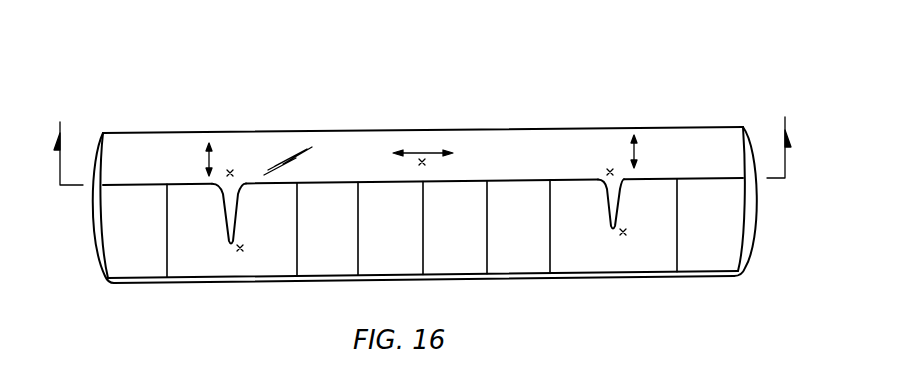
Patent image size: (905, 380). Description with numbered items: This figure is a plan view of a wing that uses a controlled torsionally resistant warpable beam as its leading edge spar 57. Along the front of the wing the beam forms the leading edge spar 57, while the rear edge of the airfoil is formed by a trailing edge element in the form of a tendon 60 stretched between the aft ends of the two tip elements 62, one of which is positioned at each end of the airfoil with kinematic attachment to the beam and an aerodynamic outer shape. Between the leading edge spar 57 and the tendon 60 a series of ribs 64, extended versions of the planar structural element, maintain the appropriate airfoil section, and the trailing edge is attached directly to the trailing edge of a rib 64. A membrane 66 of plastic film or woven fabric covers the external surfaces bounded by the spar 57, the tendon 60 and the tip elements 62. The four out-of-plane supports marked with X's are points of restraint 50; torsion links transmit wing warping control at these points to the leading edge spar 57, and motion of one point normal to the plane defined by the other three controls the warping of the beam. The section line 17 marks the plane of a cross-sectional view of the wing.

The section line 17- 17 is at (420, 135).
The points of restraint 50 is at (423, 158).
The leading edge spar 57 is at (350, 130).
The tendon 60 is at (387, 278).
The tip element 62 is at (97, 255).
The rib 64 is at (170, 247).
The membrane 66 is at (193, 202).